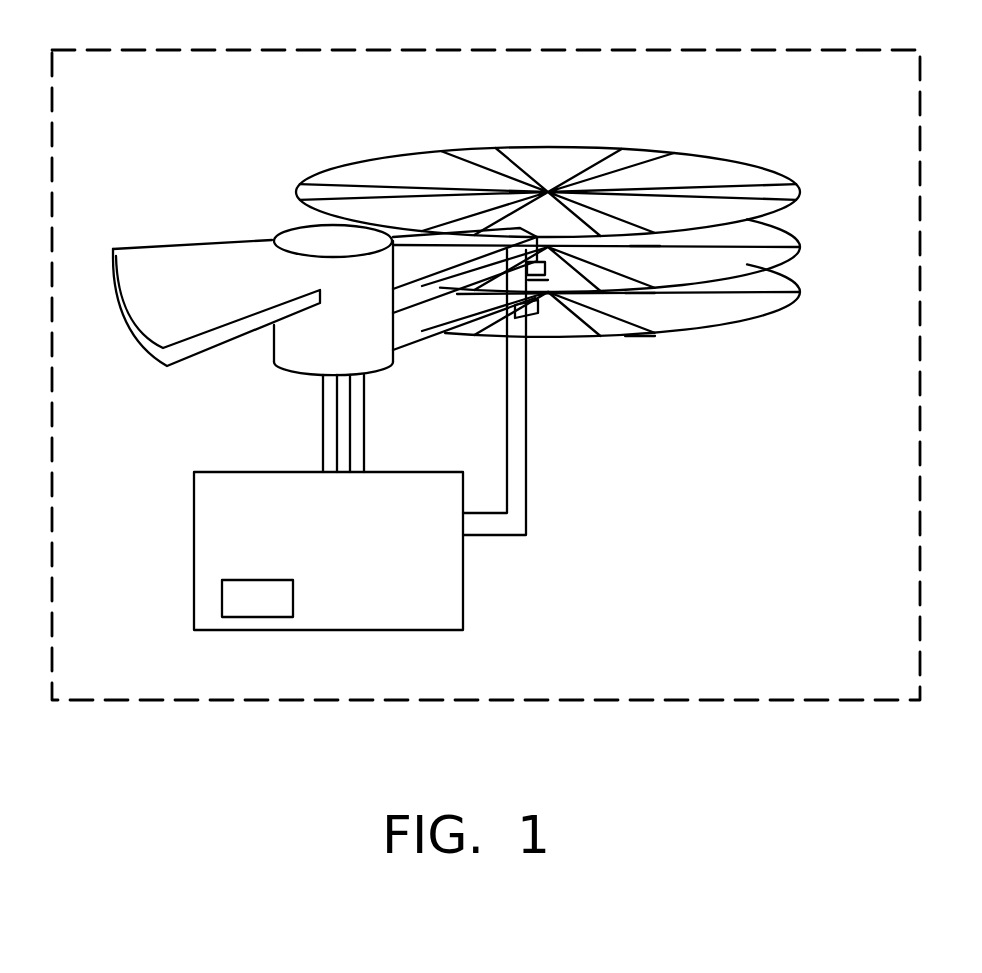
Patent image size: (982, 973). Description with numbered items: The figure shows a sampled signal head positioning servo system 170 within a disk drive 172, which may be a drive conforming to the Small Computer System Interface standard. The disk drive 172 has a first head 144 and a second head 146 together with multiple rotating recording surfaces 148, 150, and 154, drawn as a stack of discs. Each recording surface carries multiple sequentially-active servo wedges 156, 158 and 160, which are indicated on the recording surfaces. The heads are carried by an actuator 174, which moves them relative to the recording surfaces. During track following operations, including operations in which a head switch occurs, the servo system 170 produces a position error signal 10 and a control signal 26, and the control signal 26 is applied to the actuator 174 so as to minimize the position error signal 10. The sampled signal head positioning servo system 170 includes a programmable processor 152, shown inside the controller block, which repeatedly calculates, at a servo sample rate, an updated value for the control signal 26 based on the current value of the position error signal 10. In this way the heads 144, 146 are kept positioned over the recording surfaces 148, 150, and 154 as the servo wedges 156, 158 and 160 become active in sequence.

The position error signal 10 is at (528, 458).
The control signal 26 is at (322, 426).
The first head 144 is at (552, 245).
The second head 146 is at (542, 248).
The rotating recording surface 148 is at (793, 195).
The rotating recording surface 150 is at (800, 247).
The programmable processor 152 is at (222, 600).
The rotating recording surface 154 is at (797, 292).
The servo wedge 156 is at (642, 236).
The servo wedge 158 is at (637, 283).
The servo wedge 160 is at (640, 327).
The sampled signal head positioning servo system 170 is at (194, 518).
The disk drive 172 is at (379, 50).
The actuator 174 is at (160, 249).